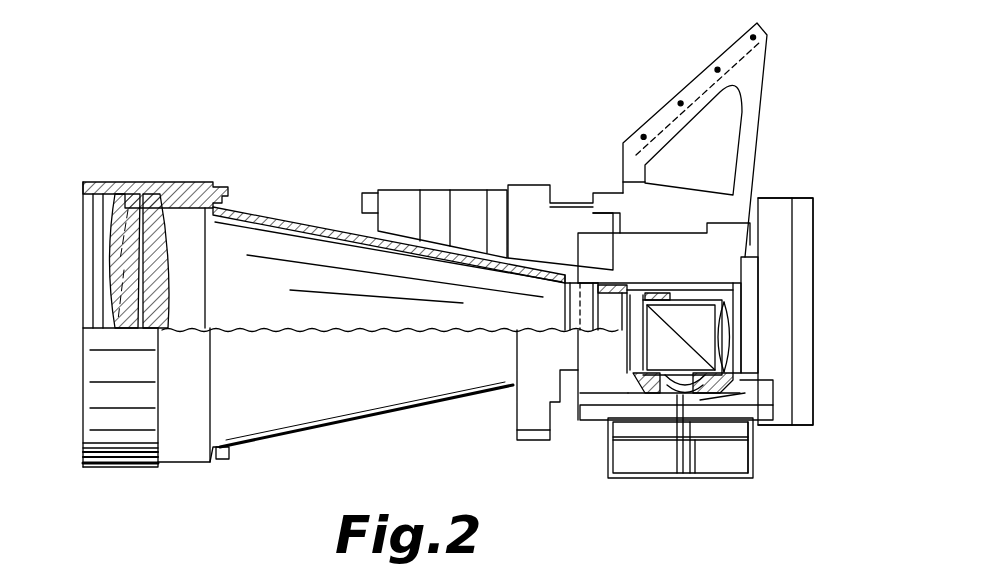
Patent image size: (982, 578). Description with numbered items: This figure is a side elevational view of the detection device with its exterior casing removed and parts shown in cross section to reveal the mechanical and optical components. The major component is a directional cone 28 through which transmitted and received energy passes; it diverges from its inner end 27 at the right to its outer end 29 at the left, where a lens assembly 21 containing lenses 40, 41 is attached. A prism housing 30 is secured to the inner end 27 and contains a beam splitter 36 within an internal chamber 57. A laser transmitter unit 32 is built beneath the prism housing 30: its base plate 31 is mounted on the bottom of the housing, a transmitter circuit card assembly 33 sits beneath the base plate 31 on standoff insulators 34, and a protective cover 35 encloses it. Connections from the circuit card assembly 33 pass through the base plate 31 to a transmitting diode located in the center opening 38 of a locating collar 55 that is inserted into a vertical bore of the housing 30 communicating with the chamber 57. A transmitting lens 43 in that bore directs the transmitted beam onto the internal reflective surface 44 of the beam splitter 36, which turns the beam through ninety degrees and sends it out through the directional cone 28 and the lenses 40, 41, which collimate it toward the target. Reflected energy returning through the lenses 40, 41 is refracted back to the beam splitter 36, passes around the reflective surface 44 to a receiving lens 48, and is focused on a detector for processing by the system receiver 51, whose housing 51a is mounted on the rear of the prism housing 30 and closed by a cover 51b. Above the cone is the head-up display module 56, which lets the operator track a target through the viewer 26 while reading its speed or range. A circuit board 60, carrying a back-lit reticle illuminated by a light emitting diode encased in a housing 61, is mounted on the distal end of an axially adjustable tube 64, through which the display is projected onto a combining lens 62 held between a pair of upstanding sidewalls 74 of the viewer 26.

The lens assembly 21 is at (112, 392).
The viewer 26 is at (650, 105).
The inner end 27 is at (565, 270).
The directional cone 28 is at (362, 398).
The outer end 29 is at (215, 460).
The prism housing 30 is at (580, 395).
The base plate 31 is at (770, 415).
The laser transmitter unit 32 is at (688, 459).
The transmitter circuit card assembly 33 is at (740, 447).
The standoff insulators 34 is at (695, 467).
The protective cover 35 is at (627, 475).
The beam splitter 36 is at (682, 314).
The center opening 38 is at (685, 453).
The lens 40 is at (140, 195).
The lens 41 is at (132, 195).
The transmitting lens 43 is at (645, 393).
The internal reflective surface 44 is at (688, 347).
The receiving lens 48 is at (732, 285).
The system receiver 51 is at (826, 286).
The housing 51a is at (782, 230).
The cover 51b is at (803, 325).
The locating collar 55 is at (715, 396).
The head-up display module 56 is at (569, 186).
The internal chamber 57 is at (642, 305).
The circuit board 60 is at (377, 190).
The housing 61 is at (362, 200).
The combining lens 62 is at (728, 57).
The axially adjustable tube 64 is at (488, 190).
The upstanding sidewalls 74 is at (750, 117).